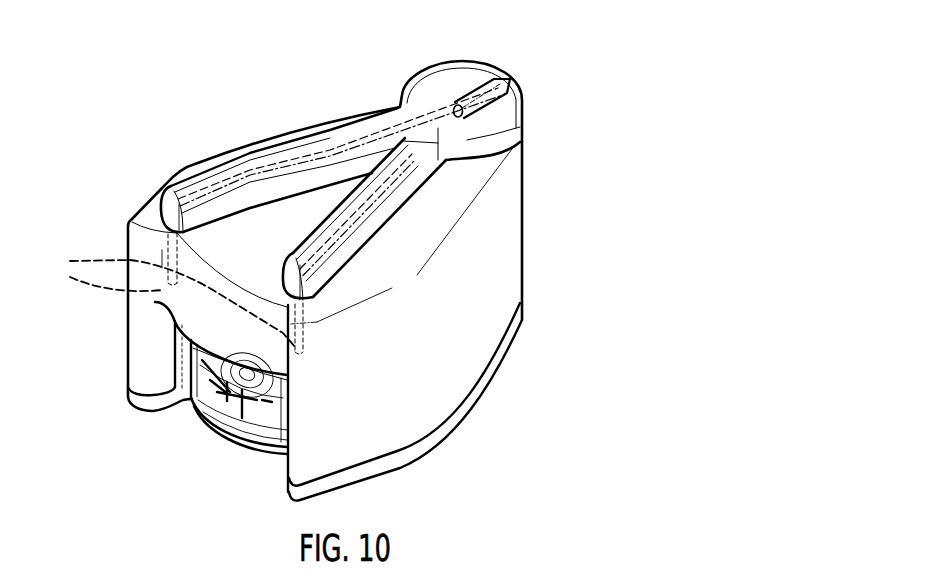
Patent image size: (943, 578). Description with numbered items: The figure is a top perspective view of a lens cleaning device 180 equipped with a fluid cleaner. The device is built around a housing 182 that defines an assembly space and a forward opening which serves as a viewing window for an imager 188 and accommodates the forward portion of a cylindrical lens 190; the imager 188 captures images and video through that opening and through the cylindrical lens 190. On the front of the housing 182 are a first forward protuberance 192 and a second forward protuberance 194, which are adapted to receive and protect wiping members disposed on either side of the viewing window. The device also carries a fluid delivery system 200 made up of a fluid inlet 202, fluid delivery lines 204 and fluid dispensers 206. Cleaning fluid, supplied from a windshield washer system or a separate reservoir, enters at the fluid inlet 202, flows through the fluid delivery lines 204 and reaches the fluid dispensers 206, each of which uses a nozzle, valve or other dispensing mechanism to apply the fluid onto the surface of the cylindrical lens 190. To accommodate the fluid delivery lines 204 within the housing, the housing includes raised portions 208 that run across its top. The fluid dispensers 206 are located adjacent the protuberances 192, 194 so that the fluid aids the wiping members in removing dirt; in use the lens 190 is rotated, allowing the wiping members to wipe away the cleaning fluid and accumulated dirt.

The lens cleaning device 180 is at (362, 271).
The housing 182 is at (487, 275).
The imager 188 is at (264, 410).
The cylindrical lens 190 is at (191, 402).
The first forward protuberance 192 is at (143, 353).
The second forward protuberance 194 is at (283, 461).
The fluid delivery system 200 is at (348, 147).
The fluid inlet 202 is at (503, 83).
The fluid delivery lines 204 is at (363, 194).
The fluid dispensers 206 is at (167, 299).
The raised portions 208 is at (387, 203).